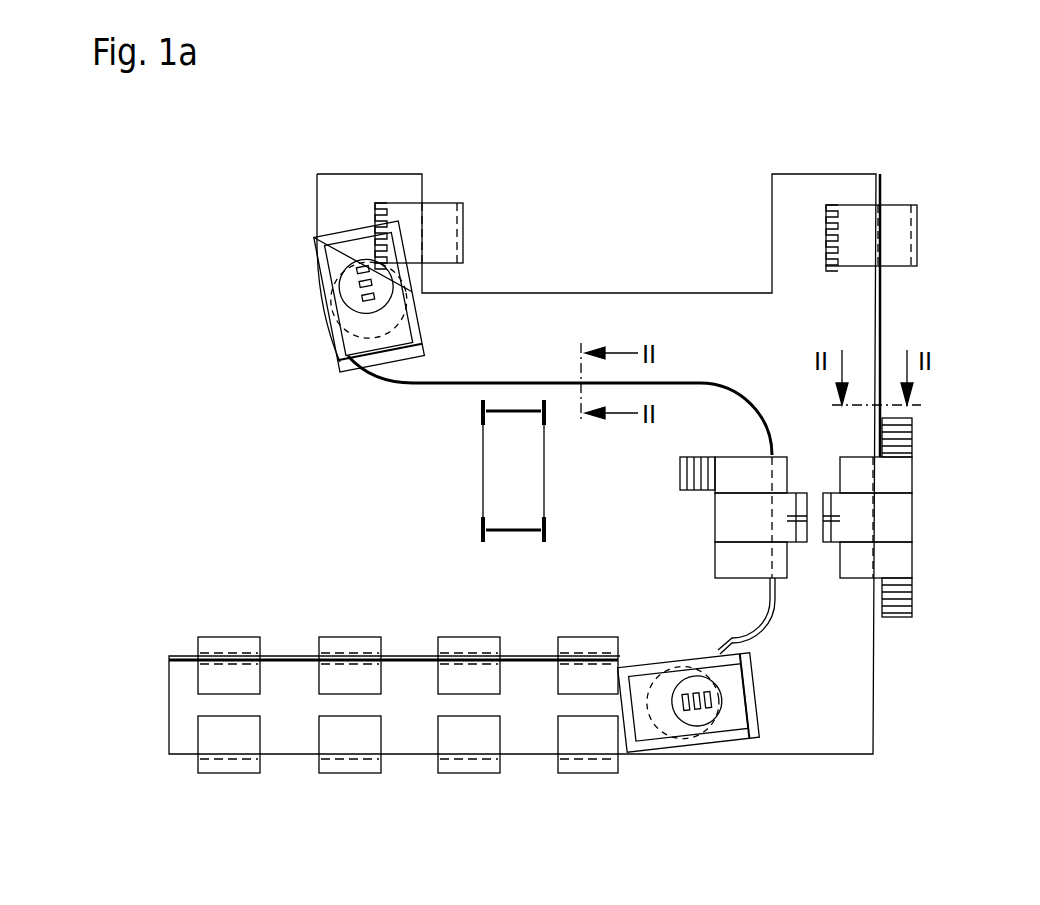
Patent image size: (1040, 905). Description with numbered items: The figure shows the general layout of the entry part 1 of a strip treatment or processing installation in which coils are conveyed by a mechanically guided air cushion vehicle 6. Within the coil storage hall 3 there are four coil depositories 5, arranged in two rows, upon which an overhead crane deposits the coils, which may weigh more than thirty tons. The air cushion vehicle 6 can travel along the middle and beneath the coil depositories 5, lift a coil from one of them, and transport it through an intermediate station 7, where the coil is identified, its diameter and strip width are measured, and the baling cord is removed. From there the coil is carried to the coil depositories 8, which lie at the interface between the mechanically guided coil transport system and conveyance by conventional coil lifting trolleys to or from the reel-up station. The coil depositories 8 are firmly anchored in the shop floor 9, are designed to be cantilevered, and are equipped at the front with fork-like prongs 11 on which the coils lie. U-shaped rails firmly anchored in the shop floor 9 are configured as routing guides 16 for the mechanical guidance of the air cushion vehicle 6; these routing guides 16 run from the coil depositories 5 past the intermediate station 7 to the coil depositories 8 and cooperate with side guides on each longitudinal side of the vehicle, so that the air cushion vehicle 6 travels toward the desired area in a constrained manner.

The entry part 1 is at (512, 128).
The coil storage hall 3 is at (548, 522).
The coil depositories 5 is at (233, 762).
The air cushion vehicle 6 is at (335, 352).
The intermediate station 7 is at (928, 473).
The coil depositories 8 is at (463, 210).
The shop floor 9 is at (845, 683).
The prongs 11 is at (378, 238).
The routing guides 16 is at (413, 388).